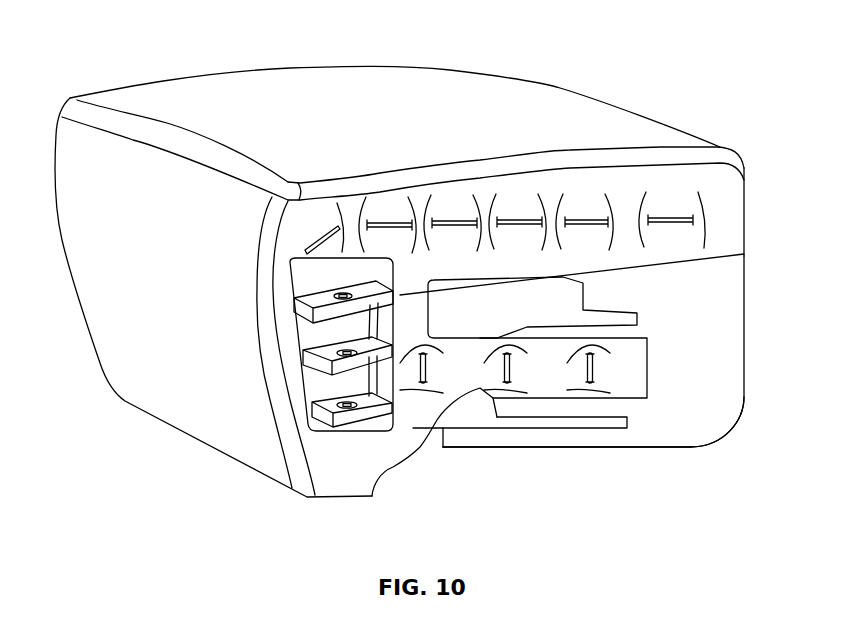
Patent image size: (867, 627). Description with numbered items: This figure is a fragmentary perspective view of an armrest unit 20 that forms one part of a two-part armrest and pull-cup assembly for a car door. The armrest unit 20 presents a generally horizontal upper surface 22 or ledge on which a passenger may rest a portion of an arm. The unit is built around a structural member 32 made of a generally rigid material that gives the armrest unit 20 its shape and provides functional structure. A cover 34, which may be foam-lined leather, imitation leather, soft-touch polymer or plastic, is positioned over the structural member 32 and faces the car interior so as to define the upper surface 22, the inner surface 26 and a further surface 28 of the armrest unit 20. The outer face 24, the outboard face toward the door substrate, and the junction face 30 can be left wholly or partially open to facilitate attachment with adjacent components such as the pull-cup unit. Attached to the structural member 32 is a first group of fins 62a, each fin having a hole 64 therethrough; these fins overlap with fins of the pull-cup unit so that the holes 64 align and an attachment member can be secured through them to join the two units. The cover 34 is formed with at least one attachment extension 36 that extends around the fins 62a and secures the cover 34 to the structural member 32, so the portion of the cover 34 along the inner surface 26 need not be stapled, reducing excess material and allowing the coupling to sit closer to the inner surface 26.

The armrest unit 20 is at (85, 46).
The upper surface 22 is at (550, 100).
The outer face 24 is at (765, 288).
The inner surface 26 is at (134, 306).
The surface 28 is at (514, 466).
The junction face 30 is at (672, 433).
The structural member 32 is at (722, 336).
The cover 34 is at (728, 180).
The attachment extension 36 is at (434, 445).
The first group of fins 62a is at (292, 312).
The hole 64 is at (344, 298).